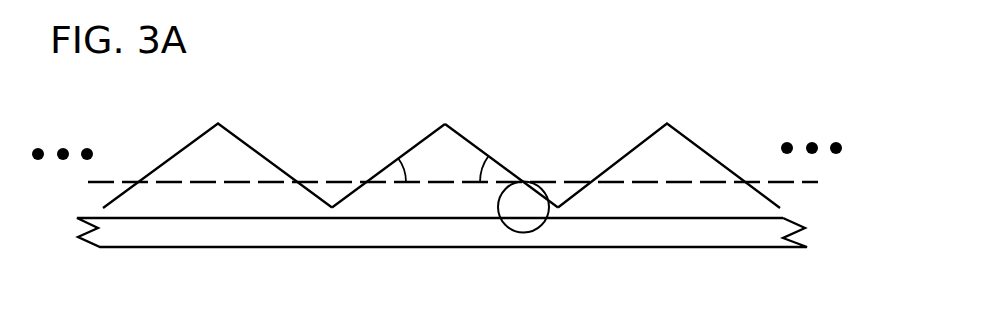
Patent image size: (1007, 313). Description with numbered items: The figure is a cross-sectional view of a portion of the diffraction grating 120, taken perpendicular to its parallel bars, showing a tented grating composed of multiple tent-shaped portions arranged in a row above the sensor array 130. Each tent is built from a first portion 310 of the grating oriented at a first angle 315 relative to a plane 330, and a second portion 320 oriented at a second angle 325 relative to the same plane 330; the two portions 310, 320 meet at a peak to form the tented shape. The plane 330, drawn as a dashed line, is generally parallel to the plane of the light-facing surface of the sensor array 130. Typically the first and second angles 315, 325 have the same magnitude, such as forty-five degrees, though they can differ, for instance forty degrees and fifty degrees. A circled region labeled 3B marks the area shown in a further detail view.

The diffraction grating 120 is at (731, 85).
The sensor array 130 is at (305, 247).
The first portion 310 is at (394, 138).
The second portion 320 is at (492, 135).
The first angle 315 is at (420, 167).
The second angle 325 is at (469, 169).
The plane 330 is at (653, 183).
The detail view region 3B is at (528, 231).